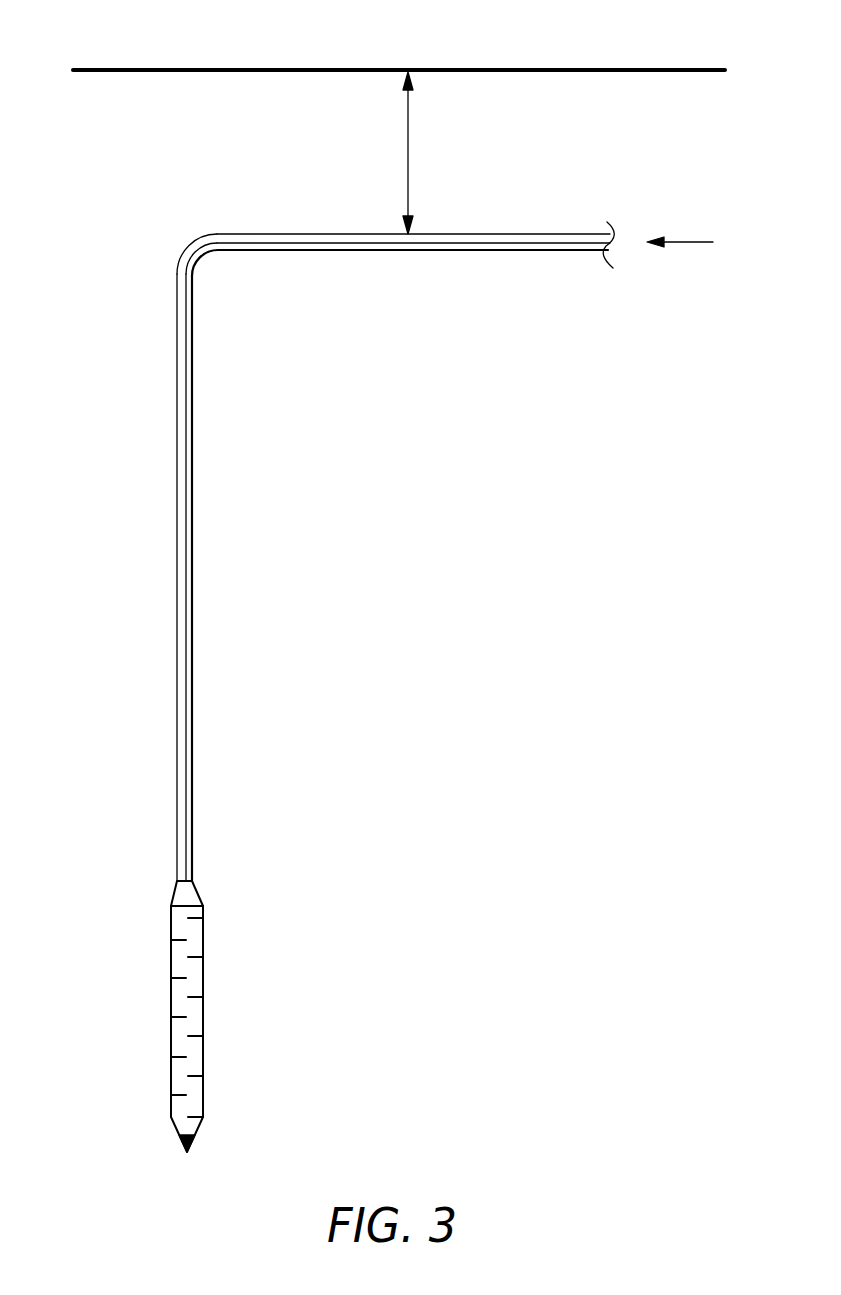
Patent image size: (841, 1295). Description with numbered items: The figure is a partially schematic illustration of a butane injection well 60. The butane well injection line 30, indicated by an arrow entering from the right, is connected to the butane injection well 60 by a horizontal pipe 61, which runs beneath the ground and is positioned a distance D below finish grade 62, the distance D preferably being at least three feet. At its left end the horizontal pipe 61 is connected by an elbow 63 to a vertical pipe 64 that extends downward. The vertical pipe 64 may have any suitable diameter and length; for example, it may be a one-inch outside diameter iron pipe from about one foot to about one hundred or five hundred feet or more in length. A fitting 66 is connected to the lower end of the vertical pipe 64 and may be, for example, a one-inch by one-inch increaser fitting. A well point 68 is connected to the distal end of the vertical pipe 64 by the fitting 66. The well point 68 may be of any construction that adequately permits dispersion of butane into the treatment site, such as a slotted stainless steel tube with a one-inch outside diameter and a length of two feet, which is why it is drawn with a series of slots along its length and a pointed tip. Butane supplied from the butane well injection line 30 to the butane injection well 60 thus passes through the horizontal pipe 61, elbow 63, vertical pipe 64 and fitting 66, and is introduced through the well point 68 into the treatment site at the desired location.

The butane well injection line 30 is at (688, 245).
The butane injection well 60 is at (128, 557).
The horizontal pipe 61 is at (351, 253).
The finish grade 62 is at (313, 68).
The elbow 63 is at (196, 253).
The vertical pipe 64 is at (194, 541).
The fitting 66 is at (190, 895).
The well point 68 is at (200, 969).
The distance D is at (407, 148).